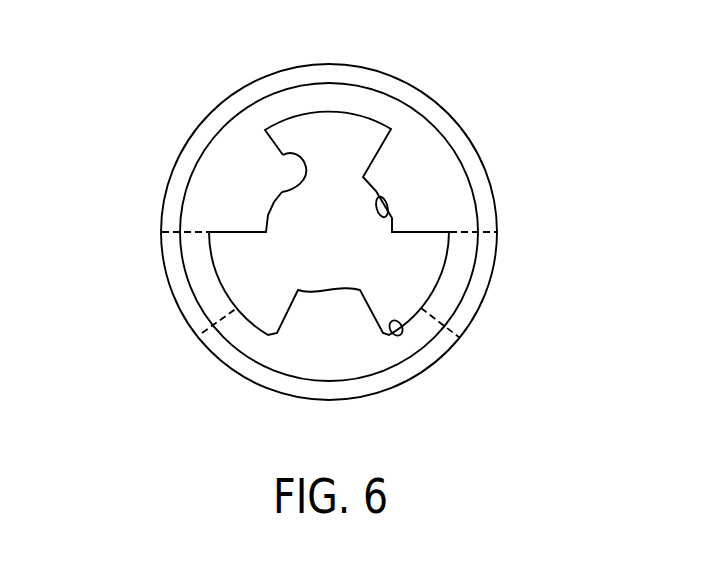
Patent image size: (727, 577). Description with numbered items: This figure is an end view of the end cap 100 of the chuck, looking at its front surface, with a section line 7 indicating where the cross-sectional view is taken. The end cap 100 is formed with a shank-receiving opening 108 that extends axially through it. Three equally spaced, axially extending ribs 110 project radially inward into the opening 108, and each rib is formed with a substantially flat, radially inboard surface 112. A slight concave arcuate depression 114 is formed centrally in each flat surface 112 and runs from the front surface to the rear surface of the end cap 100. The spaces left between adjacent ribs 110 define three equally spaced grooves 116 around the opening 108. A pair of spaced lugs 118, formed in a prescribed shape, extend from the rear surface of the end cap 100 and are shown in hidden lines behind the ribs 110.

The end cap 100 is at (481, 93).
The shank-receiving opening 108 is at (345, 112).
The ribs 110 is at (235, 195).
The radially inboard surfaces 112 is at (283, 155).
The concave arcuate depressions 114 is at (389, 220).
The grooves 116 is at (394, 333).
The lugs 118 is at (197, 278).
The section line 7- 7 is at (328, 44).